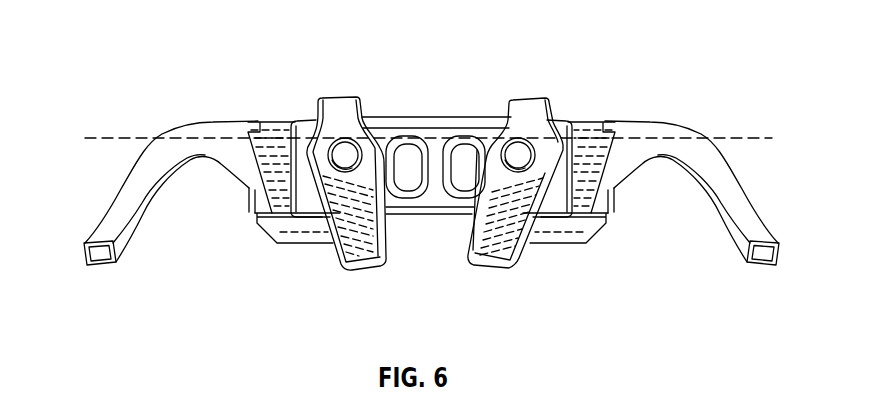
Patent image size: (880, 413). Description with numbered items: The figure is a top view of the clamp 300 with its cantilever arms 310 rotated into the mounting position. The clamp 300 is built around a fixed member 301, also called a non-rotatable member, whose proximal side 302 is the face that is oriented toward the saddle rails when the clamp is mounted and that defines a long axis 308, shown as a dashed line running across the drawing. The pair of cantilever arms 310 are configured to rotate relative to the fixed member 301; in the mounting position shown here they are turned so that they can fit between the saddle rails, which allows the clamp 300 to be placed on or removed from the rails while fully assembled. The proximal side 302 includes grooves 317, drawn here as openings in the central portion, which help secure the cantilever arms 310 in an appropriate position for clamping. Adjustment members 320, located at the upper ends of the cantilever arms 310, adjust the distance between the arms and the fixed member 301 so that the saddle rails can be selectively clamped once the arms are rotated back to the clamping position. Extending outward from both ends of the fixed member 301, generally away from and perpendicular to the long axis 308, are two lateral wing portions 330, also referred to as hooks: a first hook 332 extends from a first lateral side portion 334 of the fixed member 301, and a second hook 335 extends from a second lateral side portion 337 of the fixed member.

The clamp 300 is at (109, 48).
The long axis 308 is at (115, 137).
The fixed member 301 is at (262, 150).
The proximal side 302 is at (578, 152).
The cantilever arms 310 is at (356, 256).
The grooves 317 is at (470, 157).
The adjustment members 320 is at (344, 151).
The lateral wing portions 330 is at (432, 170).
The first hook 332 is at (134, 214).
The first lateral side portion 334 is at (220, 152).
The second hook 335 is at (728, 221).
The second lateral side portion 337 is at (629, 152).